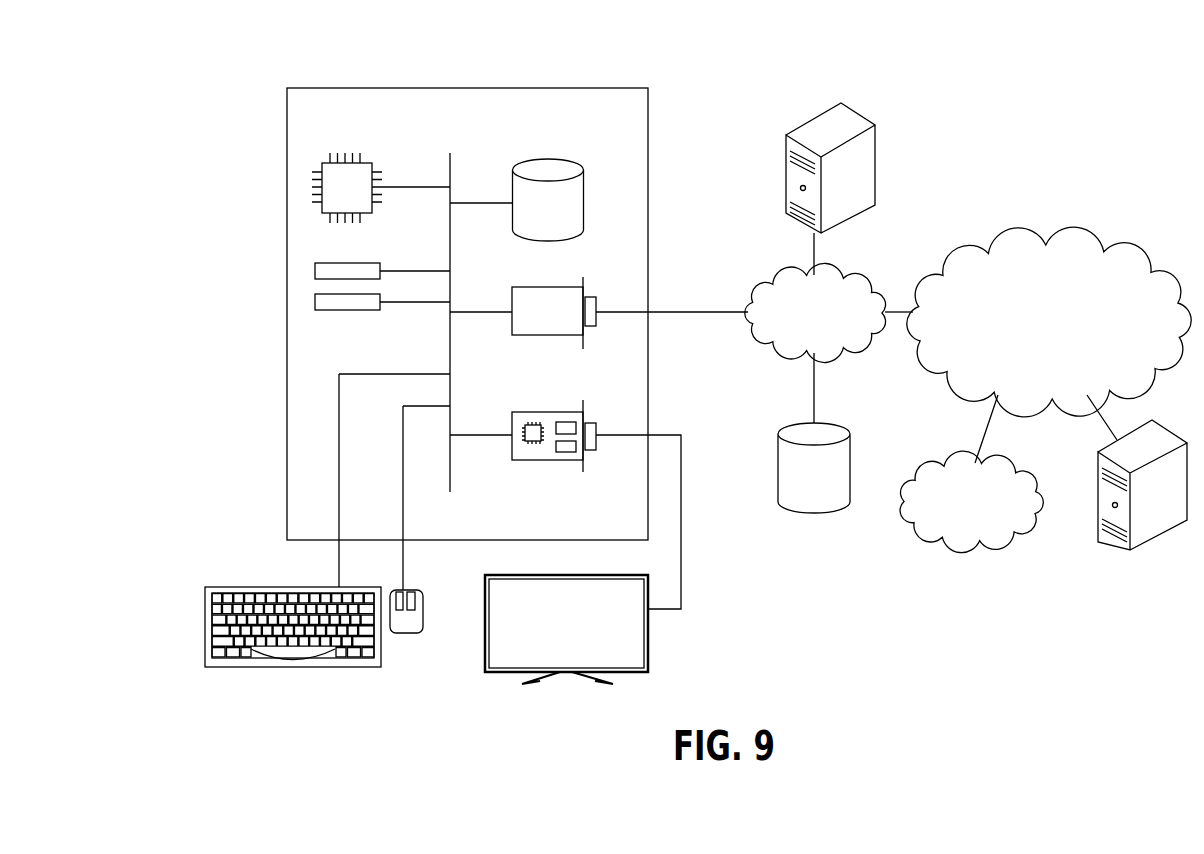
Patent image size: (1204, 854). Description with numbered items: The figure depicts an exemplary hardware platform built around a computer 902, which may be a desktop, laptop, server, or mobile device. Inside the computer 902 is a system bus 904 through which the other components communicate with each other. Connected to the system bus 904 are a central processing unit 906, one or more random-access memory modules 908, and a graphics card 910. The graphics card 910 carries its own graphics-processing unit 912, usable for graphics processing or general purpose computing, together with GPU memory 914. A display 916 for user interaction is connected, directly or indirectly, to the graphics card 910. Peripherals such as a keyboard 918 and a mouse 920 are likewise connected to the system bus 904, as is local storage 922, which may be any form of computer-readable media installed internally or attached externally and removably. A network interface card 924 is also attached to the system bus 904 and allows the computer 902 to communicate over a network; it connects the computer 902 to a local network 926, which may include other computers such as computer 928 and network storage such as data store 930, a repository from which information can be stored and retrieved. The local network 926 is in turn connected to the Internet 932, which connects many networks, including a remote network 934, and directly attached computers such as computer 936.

The computer 902 is at (589, 87).
The system bus 904 is at (451, 166).
The central processing unit 906 is at (366, 163).
The random-access memory modules 908 is at (315, 302).
The graphics card 910 is at (565, 492).
The graphics-processing unit 912 is at (532, 442).
The GPU memory 914 is at (566, 452).
The display 916 is at (648, 650).
The keyboard 918 is at (283, 667).
The mouse 920 is at (407, 633).
The local storage 922 is at (584, 198).
The network interface card 924 is at (510, 296).
The local network 926 is at (862, 278).
The computer 928 is at (857, 110).
The data store 930 is at (835, 423).
The Internet 932 is at (1020, 245).
The remote network 934 is at (1018, 465).
The computer 936 is at (1168, 425).